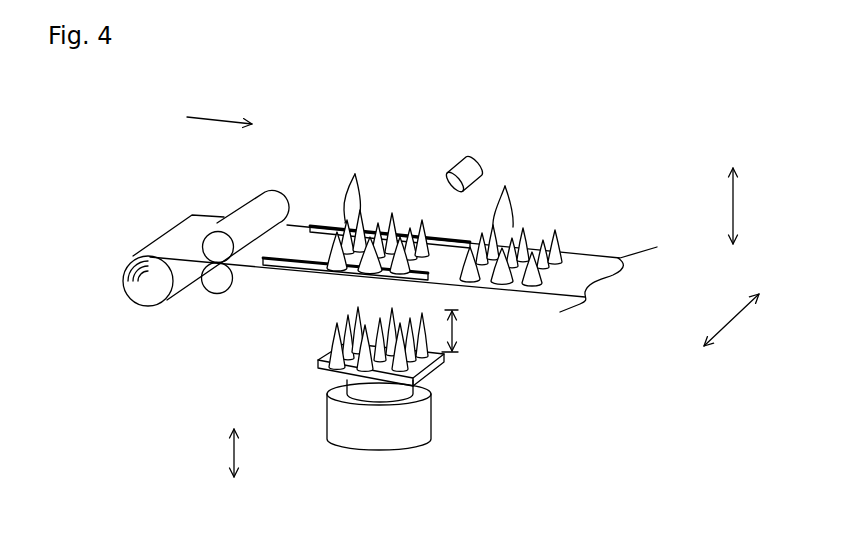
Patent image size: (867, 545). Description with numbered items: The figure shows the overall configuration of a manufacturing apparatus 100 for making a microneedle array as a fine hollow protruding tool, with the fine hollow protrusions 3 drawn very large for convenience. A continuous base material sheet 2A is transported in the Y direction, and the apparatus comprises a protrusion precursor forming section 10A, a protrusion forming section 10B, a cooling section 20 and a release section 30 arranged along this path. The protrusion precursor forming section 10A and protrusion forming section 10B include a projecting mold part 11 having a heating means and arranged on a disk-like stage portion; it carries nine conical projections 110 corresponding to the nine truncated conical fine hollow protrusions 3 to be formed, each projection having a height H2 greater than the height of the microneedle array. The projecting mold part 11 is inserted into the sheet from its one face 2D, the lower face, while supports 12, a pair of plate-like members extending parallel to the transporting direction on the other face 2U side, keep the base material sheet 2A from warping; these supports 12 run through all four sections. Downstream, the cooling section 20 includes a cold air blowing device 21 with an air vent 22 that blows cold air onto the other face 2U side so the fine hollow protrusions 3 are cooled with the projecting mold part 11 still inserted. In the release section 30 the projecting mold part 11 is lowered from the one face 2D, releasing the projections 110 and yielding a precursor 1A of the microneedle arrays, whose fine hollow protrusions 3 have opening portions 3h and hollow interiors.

The manufacturing apparatus 100 is at (647, 112).
The precursor 1A is at (588, 218).
The base material sheet 2A is at (172, 238).
The other face 2U is at (292, 252).
The one face 2D is at (265, 266).
The supports 12 is at (310, 227).
The protrusion precursor forming section 10A is at (388, 168).
The protrusion forming section 10B is at (388, 196).
The fine hollow protrusions 3 is at (427, 225).
The opening portions 3h is at (431, 189).
The cooling section 20 is at (490, 136).
The cold air blowing device 21 is at (490, 153).
The air vent 22 is at (472, 170).
The projecting mold part 11 is at (347, 363).
The projections 110 is at (357, 308).
The release section 30 is at (447, 378).
The height H2 is at (460, 331).